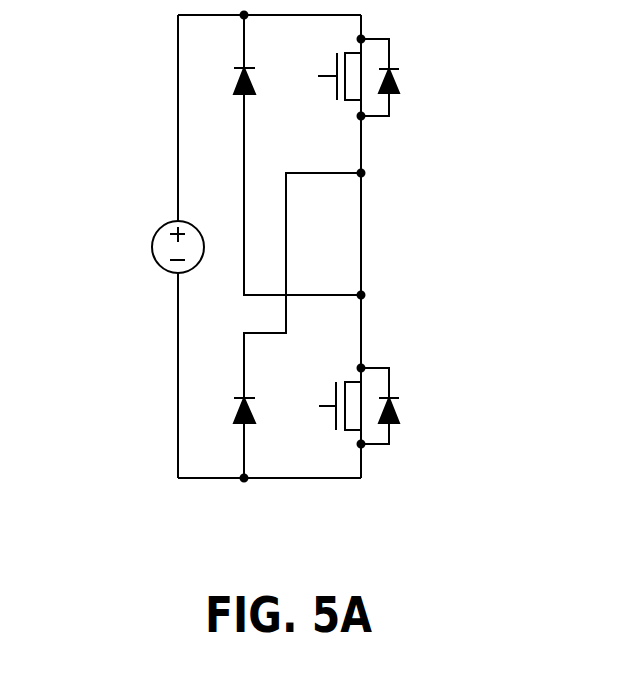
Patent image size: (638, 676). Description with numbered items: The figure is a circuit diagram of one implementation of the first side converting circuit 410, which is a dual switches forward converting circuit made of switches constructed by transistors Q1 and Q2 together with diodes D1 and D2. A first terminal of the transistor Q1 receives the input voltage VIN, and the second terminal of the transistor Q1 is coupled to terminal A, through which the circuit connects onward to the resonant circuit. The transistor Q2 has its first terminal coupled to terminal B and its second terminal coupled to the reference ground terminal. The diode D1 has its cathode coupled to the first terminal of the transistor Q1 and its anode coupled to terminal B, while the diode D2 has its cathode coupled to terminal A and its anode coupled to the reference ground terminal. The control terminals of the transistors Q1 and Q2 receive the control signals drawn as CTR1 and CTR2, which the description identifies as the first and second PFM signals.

The first side converting circuit 410 is at (438, 528).
The input voltage VIN is at (156, 247).
The diode D1 is at (228, 81).
The diode D2 is at (225, 411).
The transistor Q1 is at (337, 67).
The transistor Q2 is at (334, 371).
The first control signal CTR1 is at (301, 100).
The second control signal CTR2 is at (300, 426).